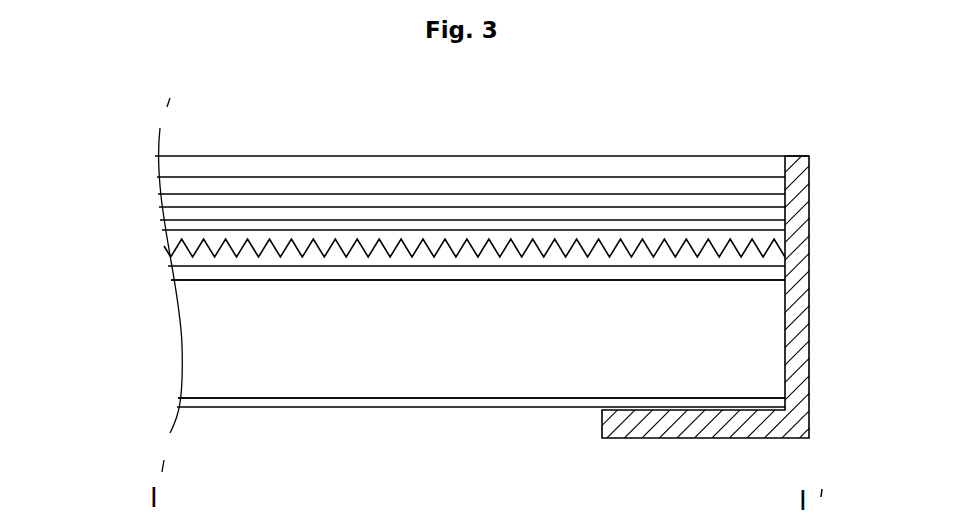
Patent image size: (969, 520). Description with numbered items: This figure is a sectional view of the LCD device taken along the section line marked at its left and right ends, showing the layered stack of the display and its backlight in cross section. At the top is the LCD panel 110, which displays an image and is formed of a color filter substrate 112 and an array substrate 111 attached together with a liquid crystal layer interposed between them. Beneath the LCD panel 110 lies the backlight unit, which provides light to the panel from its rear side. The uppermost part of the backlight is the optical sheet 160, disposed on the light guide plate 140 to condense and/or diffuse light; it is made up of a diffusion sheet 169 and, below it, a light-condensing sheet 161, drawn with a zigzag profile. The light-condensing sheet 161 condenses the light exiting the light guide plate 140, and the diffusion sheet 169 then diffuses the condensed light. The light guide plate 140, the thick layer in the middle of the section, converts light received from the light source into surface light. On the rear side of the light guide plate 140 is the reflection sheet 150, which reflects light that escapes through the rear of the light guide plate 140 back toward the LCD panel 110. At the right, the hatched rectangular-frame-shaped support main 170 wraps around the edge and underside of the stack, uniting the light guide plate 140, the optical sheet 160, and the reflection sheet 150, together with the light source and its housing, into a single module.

The LCD panel 110 is at (78, 153).
The color filter substrate 112 is at (162, 163).
The array substrate 111 is at (162, 188).
The optical sheet 160 is at (77, 212).
The diffusion sheet 169 is at (162, 223).
The light-condensing sheet 161 is at (159, 232).
The light guide plate 140 is at (187, 337).
The reflection sheet 150 is at (180, 401).
The support main 170 is at (810, 355).